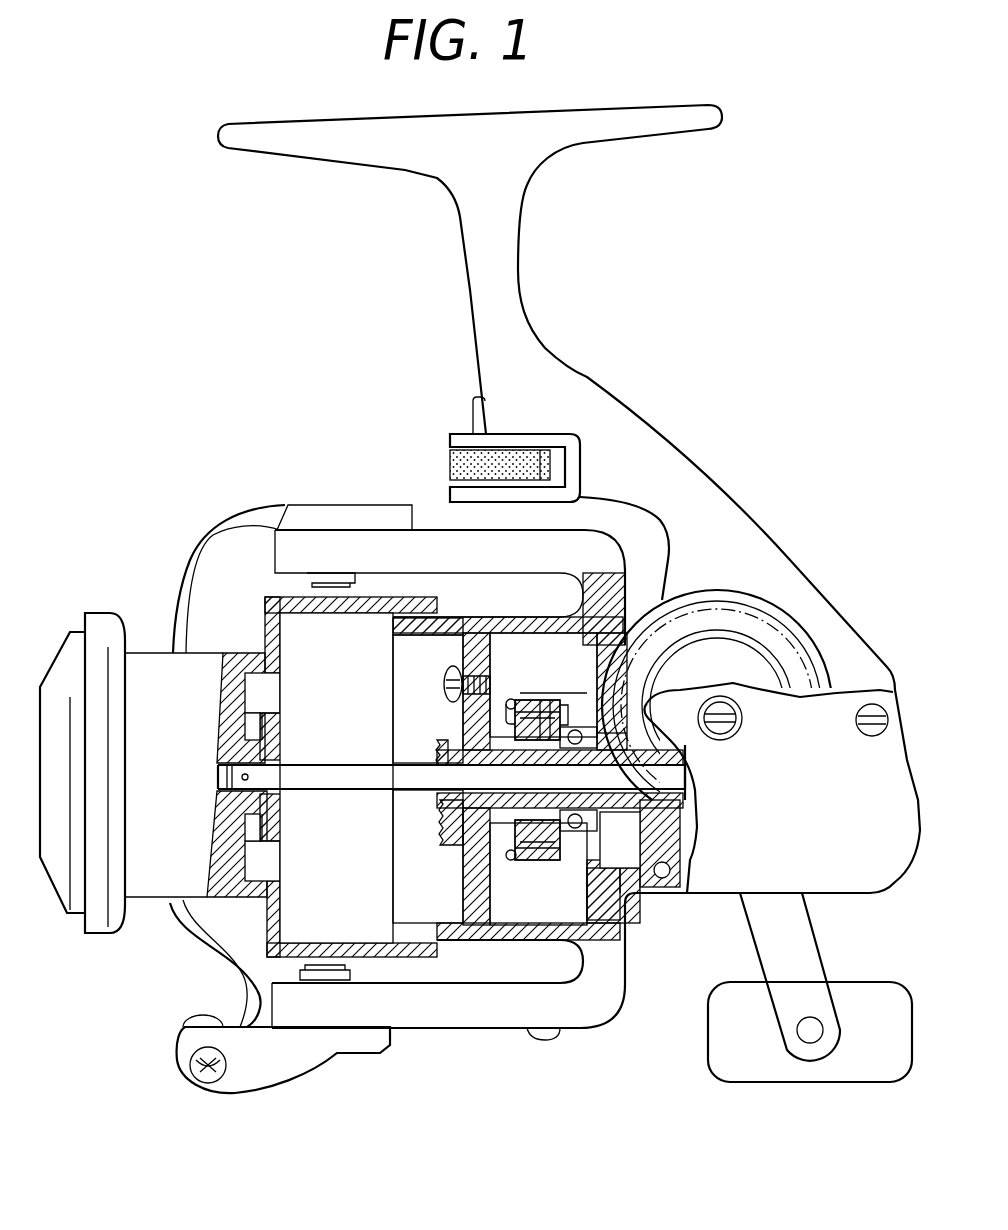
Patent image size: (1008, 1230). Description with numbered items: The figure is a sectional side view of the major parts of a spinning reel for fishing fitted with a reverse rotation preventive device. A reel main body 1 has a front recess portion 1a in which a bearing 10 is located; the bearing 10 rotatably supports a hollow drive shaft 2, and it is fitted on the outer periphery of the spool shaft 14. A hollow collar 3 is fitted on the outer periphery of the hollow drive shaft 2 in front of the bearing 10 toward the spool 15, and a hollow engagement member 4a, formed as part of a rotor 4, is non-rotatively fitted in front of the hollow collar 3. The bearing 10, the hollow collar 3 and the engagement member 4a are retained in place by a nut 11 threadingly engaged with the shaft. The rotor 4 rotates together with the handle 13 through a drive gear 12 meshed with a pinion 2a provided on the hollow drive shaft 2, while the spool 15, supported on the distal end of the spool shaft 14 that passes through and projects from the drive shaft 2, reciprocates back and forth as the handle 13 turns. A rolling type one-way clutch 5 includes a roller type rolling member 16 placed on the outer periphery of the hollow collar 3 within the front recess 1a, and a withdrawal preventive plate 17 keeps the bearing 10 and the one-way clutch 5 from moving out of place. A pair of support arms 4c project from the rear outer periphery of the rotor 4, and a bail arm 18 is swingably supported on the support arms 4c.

The reel main body 1 is at (745, 500).
The front recess portion 1a is at (527, 708).
The hollow drive shaft 2 is at (425, 748).
The pinion 2a is at (660, 893).
The hollow collar 3 is at (555, 710).
The rotor 4 is at (622, 540).
The hollow engagement member 4a is at (498, 840).
The support arms 4c is at (340, 552).
The rolling type one-way clutch 5 is at (549, 858).
The bearing 10 is at (622, 902).
The nut 11 is at (440, 830).
The drive gear 12 is at (810, 635).
The handle 13 is at (815, 945).
The spool shaft 14 is at (345, 780).
The spool 15 is at (100, 612).
The roller type rolling member 16 is at (535, 700).
The withdrawal preventive plate 17 is at (532, 870).
The bail arm 18 is at (222, 517).